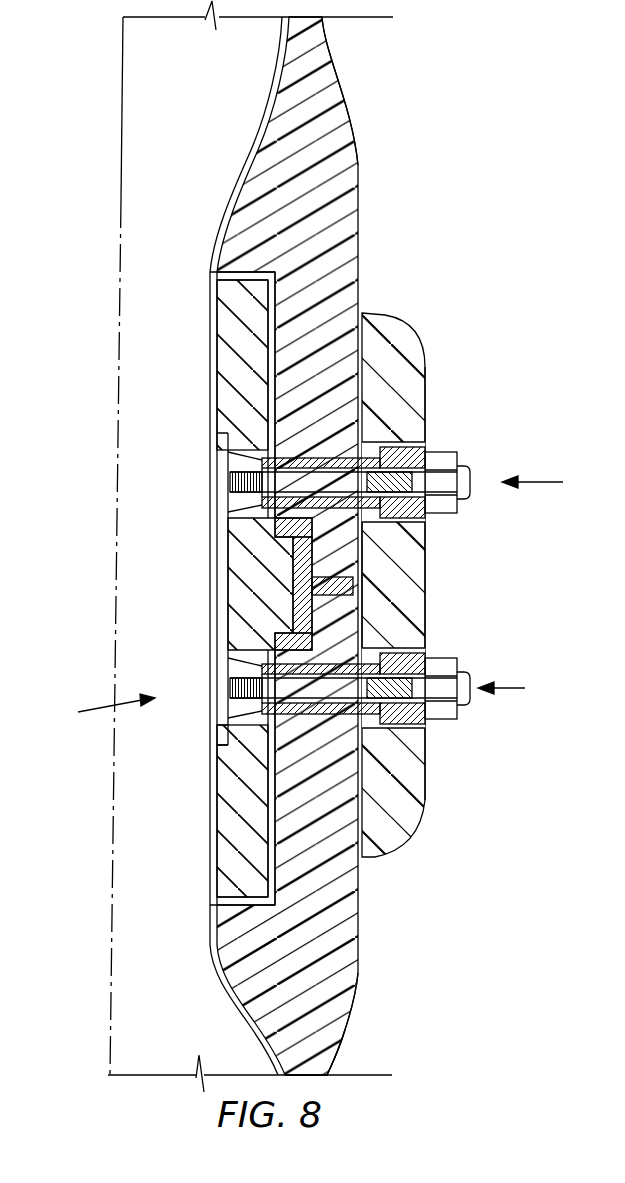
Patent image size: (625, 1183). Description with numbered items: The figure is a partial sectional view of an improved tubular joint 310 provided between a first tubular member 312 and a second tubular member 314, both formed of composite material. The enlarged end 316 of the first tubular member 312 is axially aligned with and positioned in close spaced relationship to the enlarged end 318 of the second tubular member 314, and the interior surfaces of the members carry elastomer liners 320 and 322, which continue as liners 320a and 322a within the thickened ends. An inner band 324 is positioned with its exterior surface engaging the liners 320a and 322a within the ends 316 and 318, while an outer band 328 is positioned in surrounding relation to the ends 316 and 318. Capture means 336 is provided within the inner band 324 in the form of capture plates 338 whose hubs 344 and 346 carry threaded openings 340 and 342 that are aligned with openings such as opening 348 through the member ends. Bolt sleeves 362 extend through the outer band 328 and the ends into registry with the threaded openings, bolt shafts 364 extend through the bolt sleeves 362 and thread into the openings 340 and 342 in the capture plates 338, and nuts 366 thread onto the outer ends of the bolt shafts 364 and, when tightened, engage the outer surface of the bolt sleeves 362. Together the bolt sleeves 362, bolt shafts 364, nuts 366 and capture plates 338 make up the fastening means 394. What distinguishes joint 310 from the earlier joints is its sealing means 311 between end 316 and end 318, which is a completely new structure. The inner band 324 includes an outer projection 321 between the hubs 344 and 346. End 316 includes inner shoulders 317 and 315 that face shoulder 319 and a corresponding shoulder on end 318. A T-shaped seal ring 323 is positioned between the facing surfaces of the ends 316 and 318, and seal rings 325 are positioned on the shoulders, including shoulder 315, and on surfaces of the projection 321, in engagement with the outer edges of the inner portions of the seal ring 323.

The joint 310 is at (428, 233).
The sealing means 311 is at (378, 590).
The first tubular member 312 is at (340, 1037).
The second tubular member 314 is at (330, 58).
The inner shoulder 315 is at (273, 643).
The end of first tubular member 316 is at (358, 977).
The inner shoulder 317 is at (210, 895).
The end of second tubular member 318 is at (358, 165).
The shoulder 319 is at (210, 288).
The elastomer liner 320 is at (210, 942).
The liner 320a is at (240, 840).
The outer projection 321 is at (247, 522).
The elastomer liner 322 is at (273, 90).
The liner 322a is at (217, 333).
The T-shaped seal ring 323 is at (353, 588).
The inner band 324 is at (210, 505).
The seal rings 325 is at (273, 580).
The outer band 328 is at (420, 790).
The capture means 336 is at (92, 710).
The capture plate 338 is at (240, 740).
The threaded opening 340 is at (260, 695).
The threaded opening 342 is at (232, 480).
The hub 344 is at (217, 780).
The hub 346 is at (262, 456).
The opening 348 is at (422, 765).
The bolt sleeve 362 is at (373, 447).
The bolt shaft 364 is at (263, 665).
The nut 366 is at (458, 457).
The fastening means 394 is at (545, 586).